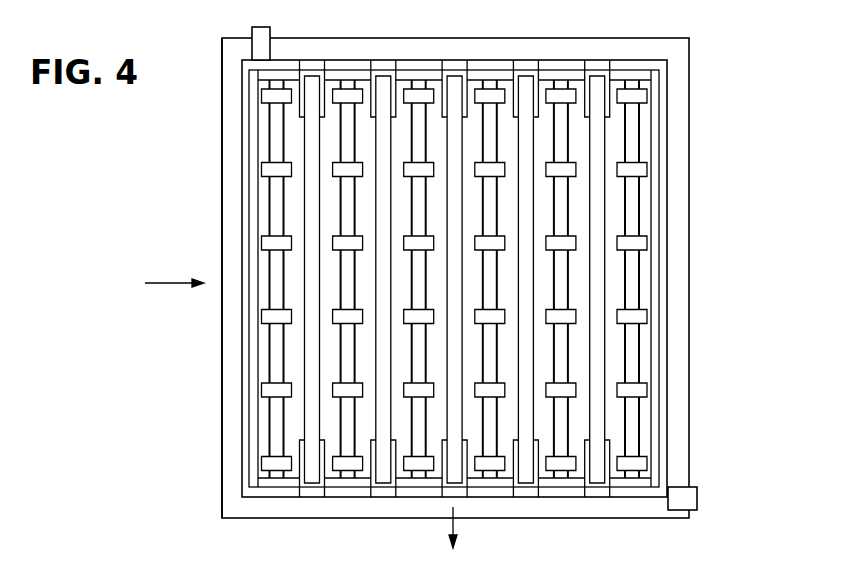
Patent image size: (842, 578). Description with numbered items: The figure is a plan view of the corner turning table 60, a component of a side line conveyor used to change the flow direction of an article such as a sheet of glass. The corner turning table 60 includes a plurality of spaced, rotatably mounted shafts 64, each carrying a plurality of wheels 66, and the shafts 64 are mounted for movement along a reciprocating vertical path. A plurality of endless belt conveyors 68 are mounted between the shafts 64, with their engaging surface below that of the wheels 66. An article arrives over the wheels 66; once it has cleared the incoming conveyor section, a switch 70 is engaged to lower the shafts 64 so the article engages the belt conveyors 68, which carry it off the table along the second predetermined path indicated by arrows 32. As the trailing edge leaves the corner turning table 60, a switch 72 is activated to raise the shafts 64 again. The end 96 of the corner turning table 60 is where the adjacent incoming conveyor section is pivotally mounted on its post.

The corner turning table 60 is at (700, 145).
The end of the corner turning table 96 is at (222, 185).
The endless belt conveyors 68 is at (453, 73).
The shafts 64 is at (273, 342).
The wheels 66 is at (262, 168).
The switch 70 is at (263, 34).
The switch 72 is at (698, 497).
The arrows designating second predetermined path 32 is at (455, 526).